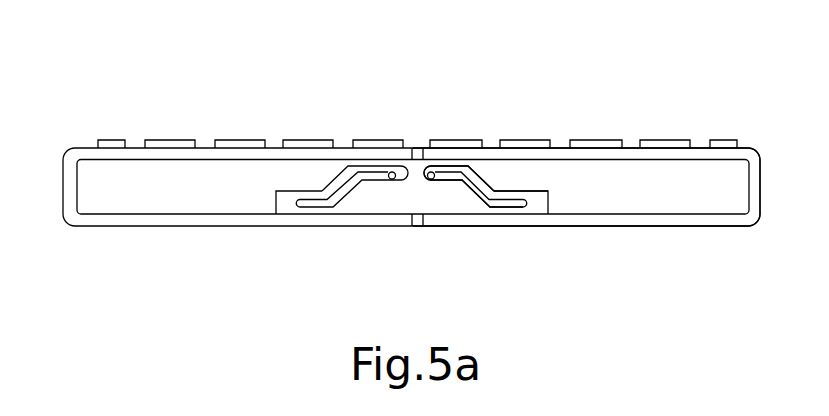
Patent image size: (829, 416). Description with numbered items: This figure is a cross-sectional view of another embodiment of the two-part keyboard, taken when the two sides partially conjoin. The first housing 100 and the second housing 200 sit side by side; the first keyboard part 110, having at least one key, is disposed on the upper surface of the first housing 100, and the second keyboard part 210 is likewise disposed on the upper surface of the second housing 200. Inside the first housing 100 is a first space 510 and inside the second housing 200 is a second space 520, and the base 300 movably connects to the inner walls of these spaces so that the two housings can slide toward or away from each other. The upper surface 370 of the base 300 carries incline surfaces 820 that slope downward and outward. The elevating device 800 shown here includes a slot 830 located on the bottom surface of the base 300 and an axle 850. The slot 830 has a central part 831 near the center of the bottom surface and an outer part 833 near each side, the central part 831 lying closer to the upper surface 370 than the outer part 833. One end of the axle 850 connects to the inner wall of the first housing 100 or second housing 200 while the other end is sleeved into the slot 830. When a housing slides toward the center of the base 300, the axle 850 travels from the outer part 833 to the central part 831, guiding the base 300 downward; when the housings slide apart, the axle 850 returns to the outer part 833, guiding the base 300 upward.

The first housing 100 is at (118, 226).
The second housing 200 is at (720, 218).
The first space 510 is at (197, 193).
The second space 520 is at (653, 195).
The first keyboard part 110 is at (167, 139).
The second keyboard part 210 is at (658, 140).
The upper surface 370 is at (425, 160).
The base 300 is at (405, 200).
The outer part 833 is at (282, 200).
The incline surfaces 820 is at (340, 175).
The central part 831 is at (418, 196).
The slot 830 is at (518, 200).
The axle 850 is at (432, 180).
The elevating device 800 is at (468, 213).